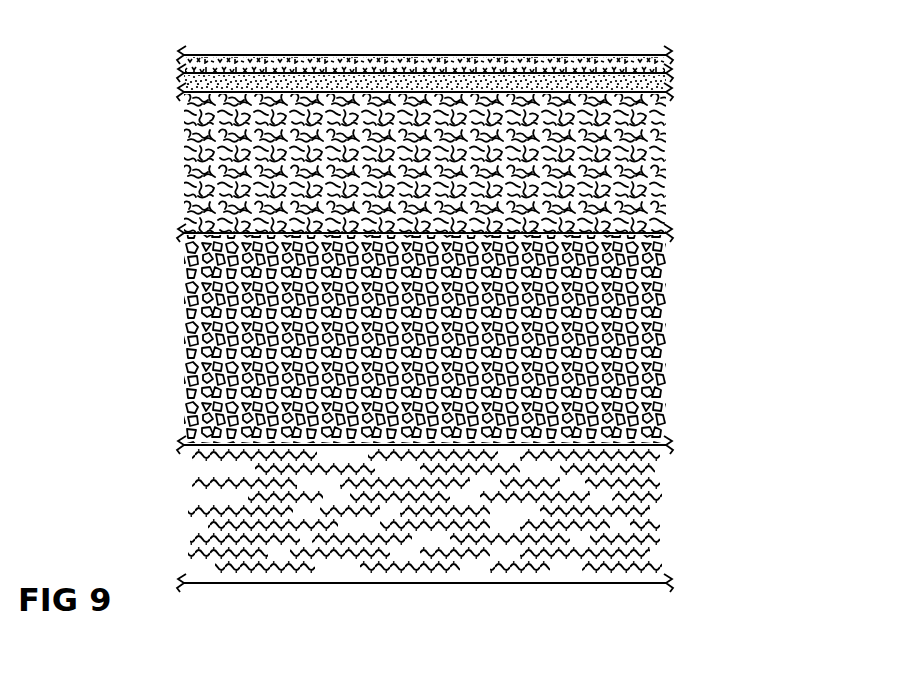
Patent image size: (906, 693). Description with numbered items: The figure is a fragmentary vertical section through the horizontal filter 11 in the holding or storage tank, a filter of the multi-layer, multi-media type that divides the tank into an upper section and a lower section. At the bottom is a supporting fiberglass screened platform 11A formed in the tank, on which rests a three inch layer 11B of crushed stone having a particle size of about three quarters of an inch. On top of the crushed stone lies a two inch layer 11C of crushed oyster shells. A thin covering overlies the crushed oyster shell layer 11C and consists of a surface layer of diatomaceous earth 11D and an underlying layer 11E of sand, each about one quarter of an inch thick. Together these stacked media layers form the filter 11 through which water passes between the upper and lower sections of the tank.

The filter 11 is at (126, 180).
The supporting fiberglass screened platform 11A is at (652, 511).
The layer of crushed stone 11B is at (645, 325).
The layer of crushed oyster shells 11C is at (640, 183).
The surface layer of diatomaceous earth 11D is at (662, 64).
The layer of sand 11E is at (655, 83).